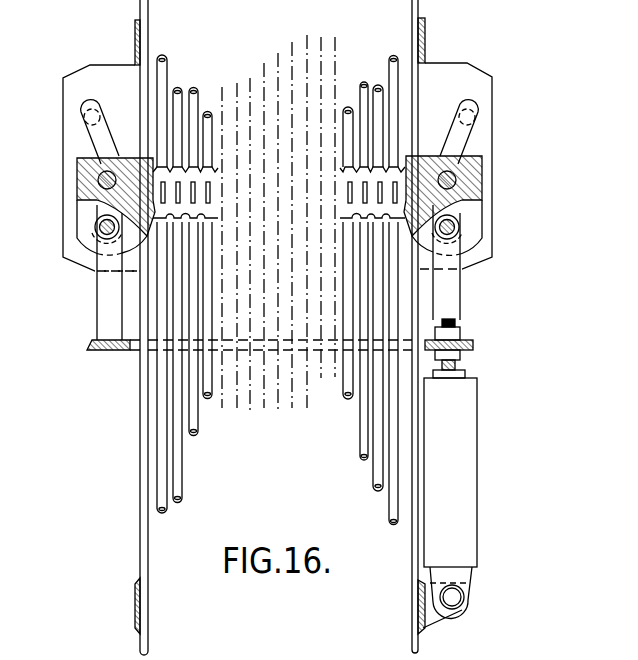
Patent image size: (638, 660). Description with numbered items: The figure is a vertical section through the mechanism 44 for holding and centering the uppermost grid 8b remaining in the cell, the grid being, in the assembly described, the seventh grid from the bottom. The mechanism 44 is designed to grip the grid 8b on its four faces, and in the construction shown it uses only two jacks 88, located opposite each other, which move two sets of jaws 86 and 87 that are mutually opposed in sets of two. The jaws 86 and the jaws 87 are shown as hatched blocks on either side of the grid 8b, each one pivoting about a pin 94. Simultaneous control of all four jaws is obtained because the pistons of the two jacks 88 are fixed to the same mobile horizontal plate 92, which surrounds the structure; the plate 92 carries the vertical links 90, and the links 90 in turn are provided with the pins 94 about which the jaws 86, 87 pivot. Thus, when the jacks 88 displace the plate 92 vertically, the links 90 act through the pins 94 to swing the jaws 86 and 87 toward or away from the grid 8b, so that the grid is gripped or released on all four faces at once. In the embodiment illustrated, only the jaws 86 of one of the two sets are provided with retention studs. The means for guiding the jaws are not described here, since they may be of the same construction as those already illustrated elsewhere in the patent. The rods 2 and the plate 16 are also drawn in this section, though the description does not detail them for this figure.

The rods 2 is at (193, 87).
The left plate 16 is at (143, 513).
The mechanism for holding and centering the uppermost grid 44 is at (444, 58).
The jaws 87 is at (80, 178).
The jaws 86 is at (470, 186).
The uppermost grid 8b is at (367, 180).
The pins 94 is at (100, 228).
The vertical links 90 is at (110, 302).
The mobile horizontal plate 92 is at (102, 350).
The jacks 88 is at (457, 435).